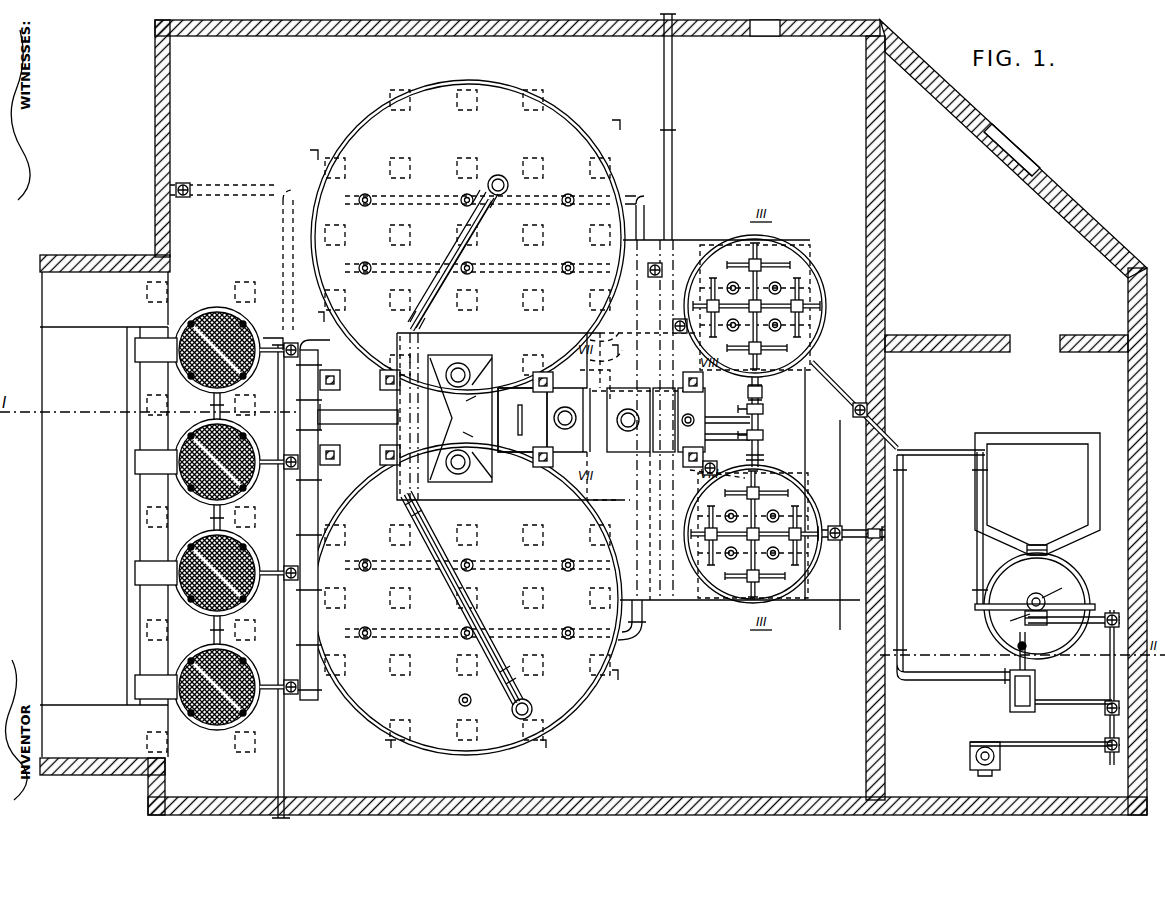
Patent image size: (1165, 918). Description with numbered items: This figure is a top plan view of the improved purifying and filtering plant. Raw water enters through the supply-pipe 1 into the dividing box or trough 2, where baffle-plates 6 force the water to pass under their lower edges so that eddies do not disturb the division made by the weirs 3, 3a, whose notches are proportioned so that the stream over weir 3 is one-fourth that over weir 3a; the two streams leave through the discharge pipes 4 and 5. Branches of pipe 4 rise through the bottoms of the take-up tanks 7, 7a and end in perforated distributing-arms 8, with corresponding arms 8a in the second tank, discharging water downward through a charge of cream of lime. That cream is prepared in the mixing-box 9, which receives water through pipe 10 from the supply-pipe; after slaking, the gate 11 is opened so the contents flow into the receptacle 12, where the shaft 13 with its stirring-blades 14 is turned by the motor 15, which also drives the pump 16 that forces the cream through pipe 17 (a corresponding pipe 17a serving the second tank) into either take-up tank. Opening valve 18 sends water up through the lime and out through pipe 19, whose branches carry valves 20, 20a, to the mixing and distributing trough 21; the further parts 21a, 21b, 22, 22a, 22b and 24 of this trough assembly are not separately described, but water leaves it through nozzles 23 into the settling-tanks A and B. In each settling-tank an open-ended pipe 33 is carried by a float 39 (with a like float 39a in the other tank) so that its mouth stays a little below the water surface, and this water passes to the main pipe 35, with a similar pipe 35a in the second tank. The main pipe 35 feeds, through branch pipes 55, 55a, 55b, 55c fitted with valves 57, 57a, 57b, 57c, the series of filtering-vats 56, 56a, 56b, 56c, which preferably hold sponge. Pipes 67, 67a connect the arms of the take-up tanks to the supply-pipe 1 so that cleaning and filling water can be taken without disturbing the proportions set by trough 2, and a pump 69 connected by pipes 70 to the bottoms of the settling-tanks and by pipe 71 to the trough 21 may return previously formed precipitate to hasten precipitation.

The supply-pipe 1 is at (628, 420).
The dividing box or trough 2 is at (648, 398).
The weir 3 is at (691, 420).
The weir 3a is at (595, 385).
The discharge pipe 4 is at (722, 414).
The discharge pipe 5 is at (566, 428).
The baffle-plates 6 is at (711, 366).
The take-up tank 7 is at (822, 302).
The take-up tank 7a is at (814, 506).
The distributing-arms 8 is at (756, 306).
The distributing pipes 8a is at (755, 534).
The mixing-box 9 is at (1037, 494).
The pipe 10 is at (933, 450).
The gate 11 is at (1036, 545).
The receptacle 12 is at (1035, 606).
The shaft 13 is at (1040, 598).
The stirring-blades 14 is at (1045, 604).
The motor 15 is at (1002, 760).
The pump 16 is at (1036, 686).
The pipe 17 is at (903, 572).
The pipe 17a is at (842, 540).
The valve 18 is at (762, 391).
The pipe 19 is at (770, 457).
The valve 20 is at (763, 409).
The valve 20a is at (763, 435).
The mixing and distributing trough 21 is at (548, 416).
The wall 21a is at (488, 357).
The wall 21b is at (488, 480).
The compartment 22 is at (522, 420).
The compartment 22a is at (532, 442).
The compartment 22b is at (520, 399).
The nozzle 23 is at (458, 364).
The settling tank 24 is at (460, 418).
The pipe 33 is at (452, 255).
The main pipe 35 is at (372, 412).
The pipe 35a is at (448, 580).
The float 39 is at (458, 252).
The outlet 39a is at (524, 700).
The branch pipe 55 is at (266, 340).
The branch pipe 55a is at (264, 431).
The pipe 55b is at (262, 609).
The pipe 55c is at (264, 715).
The filtering-vat 56 is at (215, 308).
The filtering-vat 56a is at (212, 510).
The filter 56b is at (212, 620).
The filter 56c is at (212, 733).
The valve 57 is at (296, 343).
The valve 57a is at (288, 472).
The valve 57b is at (288, 565).
The valve 57c is at (294, 694).
The pipe 67 is at (745, 390).
The pipe 67a is at (717, 465).
The pump 69 is at (615, 345).
The pipes 70 is at (601, 354).
The pipe 71 is at (557, 357).